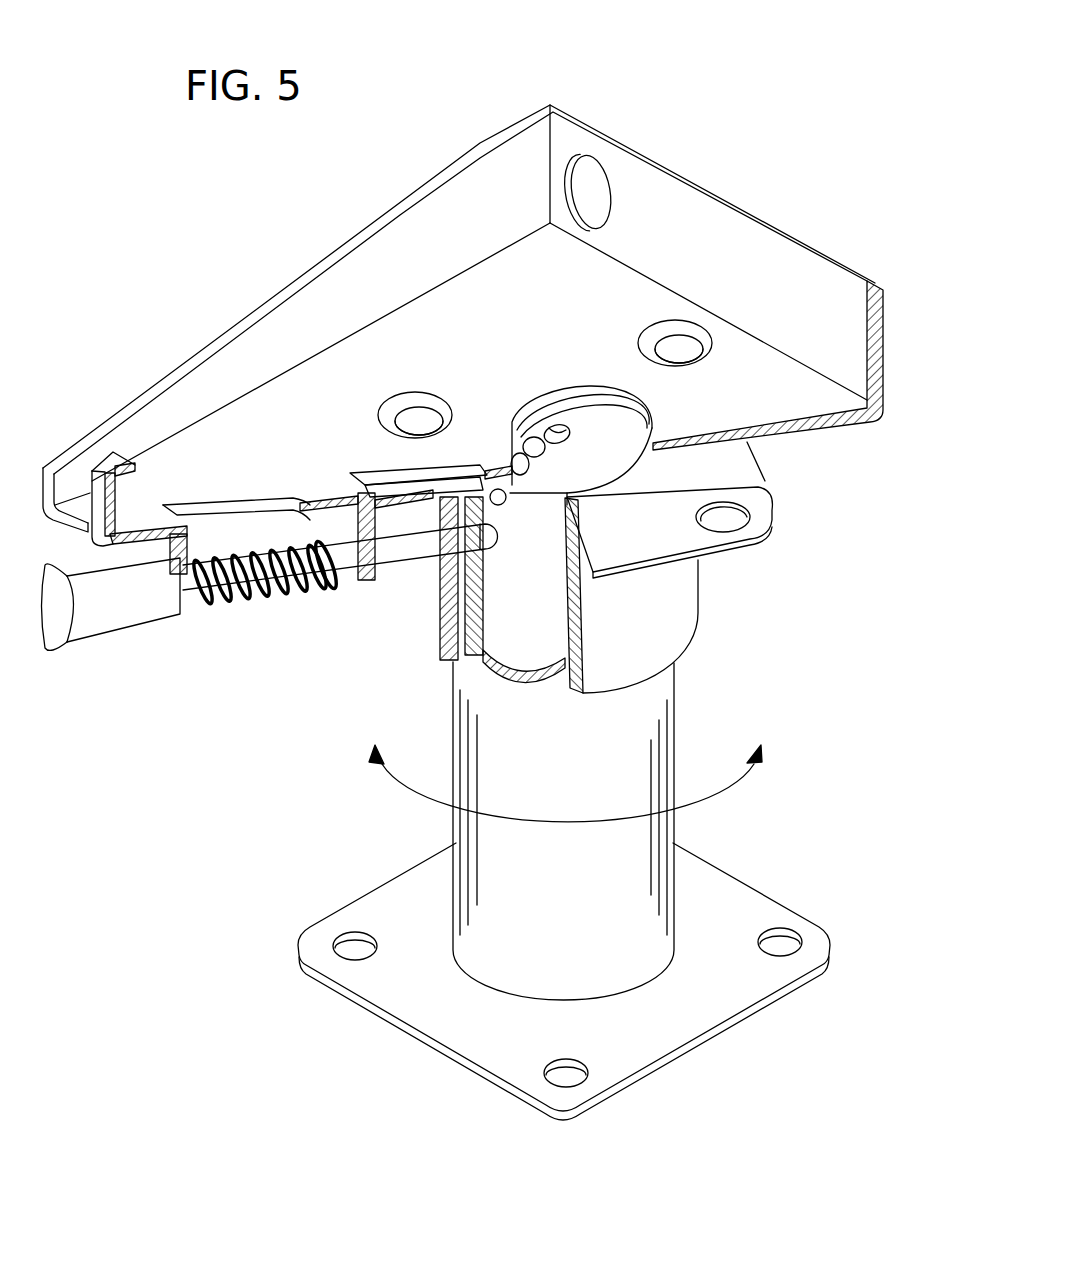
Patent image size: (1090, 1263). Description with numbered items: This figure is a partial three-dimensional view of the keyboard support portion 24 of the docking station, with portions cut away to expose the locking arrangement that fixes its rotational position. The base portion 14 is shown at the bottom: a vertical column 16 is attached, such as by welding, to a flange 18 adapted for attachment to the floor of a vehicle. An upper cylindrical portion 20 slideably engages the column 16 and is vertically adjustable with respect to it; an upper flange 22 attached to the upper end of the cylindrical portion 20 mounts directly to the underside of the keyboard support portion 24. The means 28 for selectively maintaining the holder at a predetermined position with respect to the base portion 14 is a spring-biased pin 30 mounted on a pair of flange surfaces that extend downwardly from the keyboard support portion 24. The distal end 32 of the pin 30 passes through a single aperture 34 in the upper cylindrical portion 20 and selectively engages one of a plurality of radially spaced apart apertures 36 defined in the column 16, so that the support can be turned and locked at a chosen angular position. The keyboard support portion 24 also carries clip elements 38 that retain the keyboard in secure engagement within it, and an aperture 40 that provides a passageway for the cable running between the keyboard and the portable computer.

The base portion 14 is at (469, 891).
The vertical column 16 is at (640, 865).
The flange 18 is at (679, 1000).
The upper cylindrical portion 20 is at (658, 597).
The upper flange 22 is at (730, 460).
The keyboard support portion 24 is at (670, 218).
The means for selectively maintaining the holder 28 is at (232, 632).
The spring-biased pin 30 is at (125, 598).
The distal end 32 is at (350, 555).
The aperture 34 is at (432, 612).
The radially spaced apart apertures 36 is at (570, 437).
The clip elements 38 is at (117, 508).
The apertures 40 is at (600, 160).